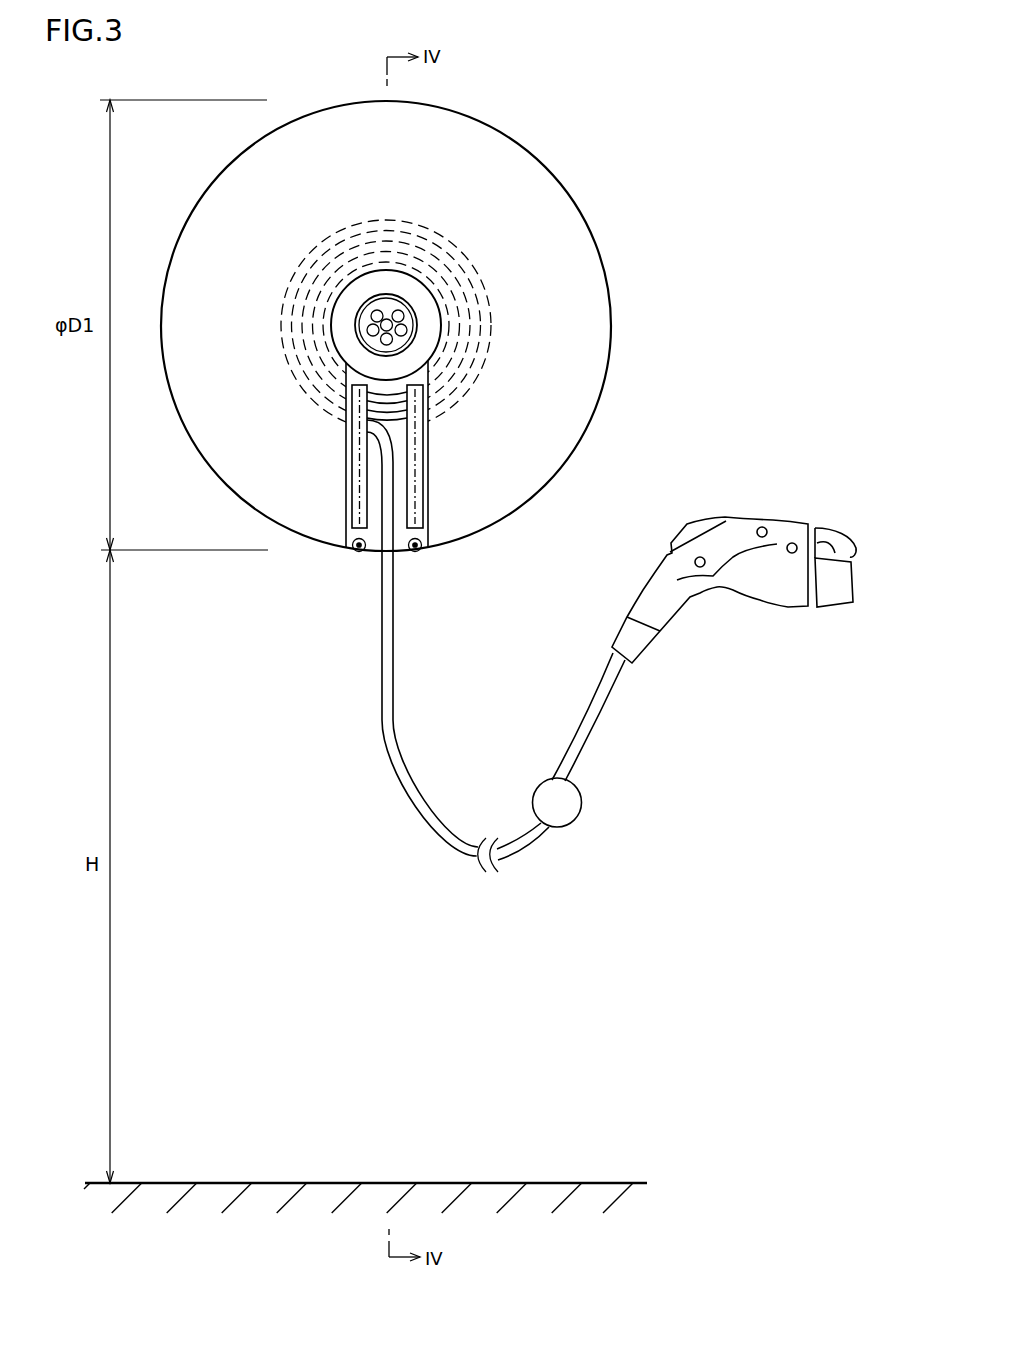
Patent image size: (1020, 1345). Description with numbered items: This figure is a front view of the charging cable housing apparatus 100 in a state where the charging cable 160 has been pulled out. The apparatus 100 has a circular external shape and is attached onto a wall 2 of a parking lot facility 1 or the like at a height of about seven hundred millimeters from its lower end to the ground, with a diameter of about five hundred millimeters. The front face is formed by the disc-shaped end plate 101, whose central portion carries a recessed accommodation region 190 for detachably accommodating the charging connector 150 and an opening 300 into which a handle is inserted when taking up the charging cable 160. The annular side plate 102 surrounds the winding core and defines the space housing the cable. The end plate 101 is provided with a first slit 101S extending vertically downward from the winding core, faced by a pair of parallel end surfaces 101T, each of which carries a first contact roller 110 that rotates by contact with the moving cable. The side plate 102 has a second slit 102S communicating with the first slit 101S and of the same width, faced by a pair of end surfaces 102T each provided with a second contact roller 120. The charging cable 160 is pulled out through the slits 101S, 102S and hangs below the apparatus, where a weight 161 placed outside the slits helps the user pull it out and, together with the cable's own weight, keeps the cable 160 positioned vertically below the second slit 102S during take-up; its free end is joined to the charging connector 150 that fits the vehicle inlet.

The parking lot facility 1 is at (607, 1183).
The wall 2 is at (592, 1018).
The charging cable housing apparatus 100 is at (709, 780).
The end plate 101 is at (562, 248).
The end surface 101T is at (346, 440).
The first slit 101S is at (374, 524).
The side plate 102 is at (527, 148).
The end surface 102T is at (313, 538).
The second slit 102S is at (401, 552).
The first contact roller 110 is at (357, 498).
The second contact roller 120 is at (355, 553).
The charging connector 150 is at (763, 587).
The charging cable 160 is at (440, 837).
The weight 161 is at (568, 807).
The recessed accommodation region 190 is at (418, 320).
The opening 300 is at (386, 316).